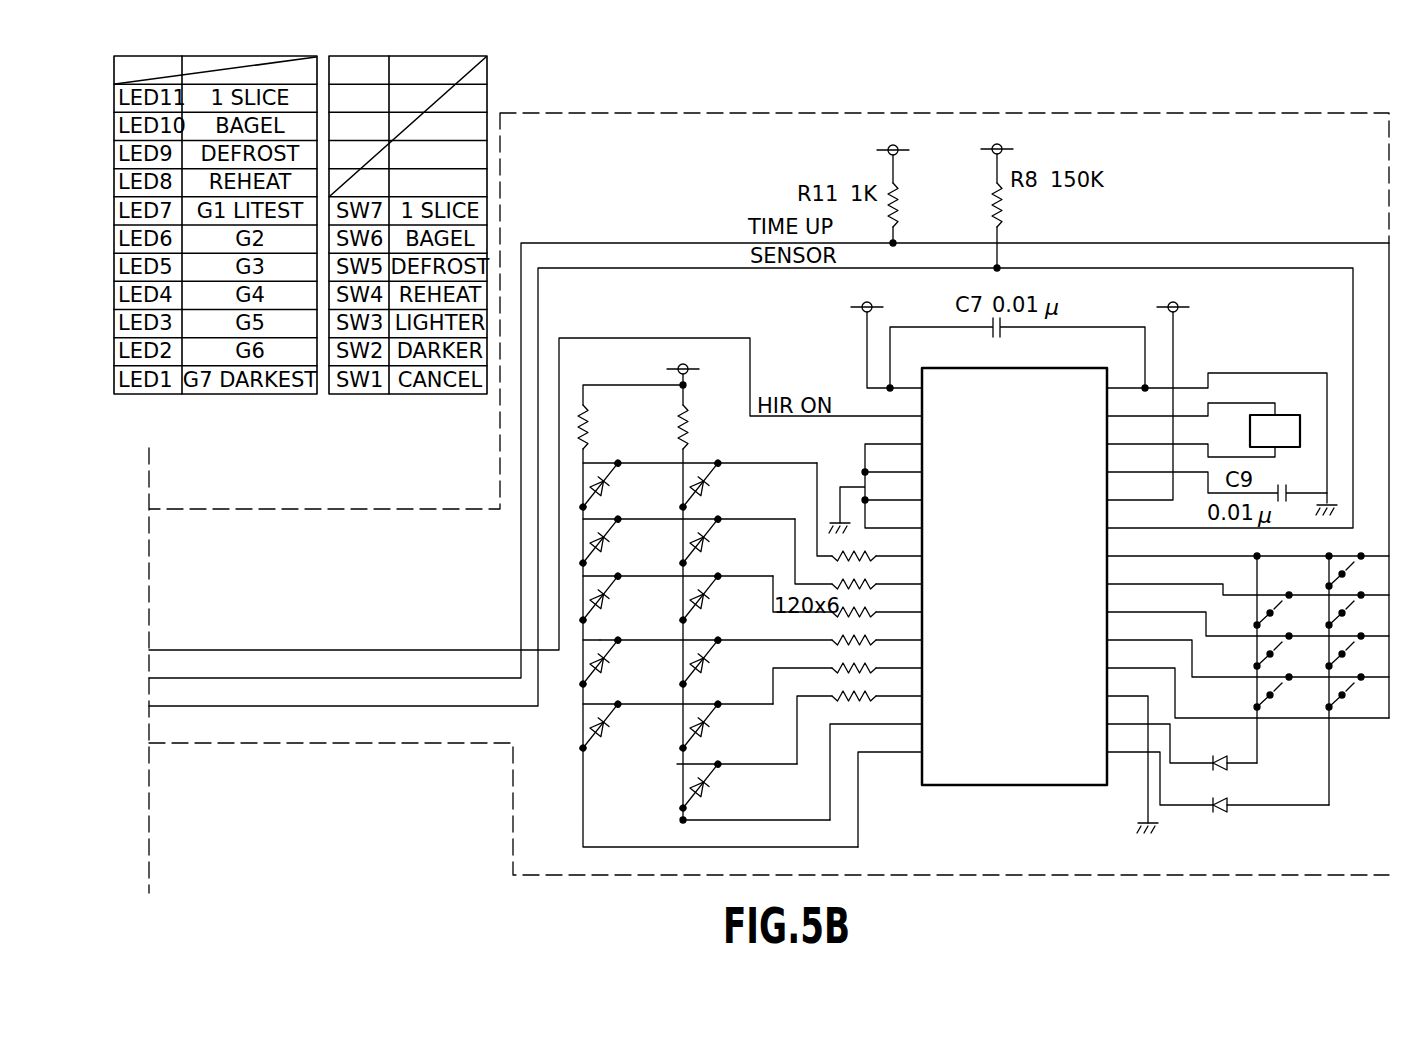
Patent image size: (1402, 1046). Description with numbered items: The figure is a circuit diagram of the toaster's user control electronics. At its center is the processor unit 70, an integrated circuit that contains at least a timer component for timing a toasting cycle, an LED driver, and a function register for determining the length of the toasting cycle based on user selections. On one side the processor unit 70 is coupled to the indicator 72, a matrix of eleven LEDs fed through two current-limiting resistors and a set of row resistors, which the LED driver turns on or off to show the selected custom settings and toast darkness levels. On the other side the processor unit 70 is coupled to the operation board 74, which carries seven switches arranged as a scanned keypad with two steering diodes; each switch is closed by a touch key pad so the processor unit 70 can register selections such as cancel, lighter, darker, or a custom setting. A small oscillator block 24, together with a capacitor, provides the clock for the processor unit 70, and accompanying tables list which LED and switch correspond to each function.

The oscillator 24 is at (1217, 421).
The processor unit 70 is at (1097, 789).
The indicator 72 is at (581, 761).
The operation board 74 is at (1347, 720).